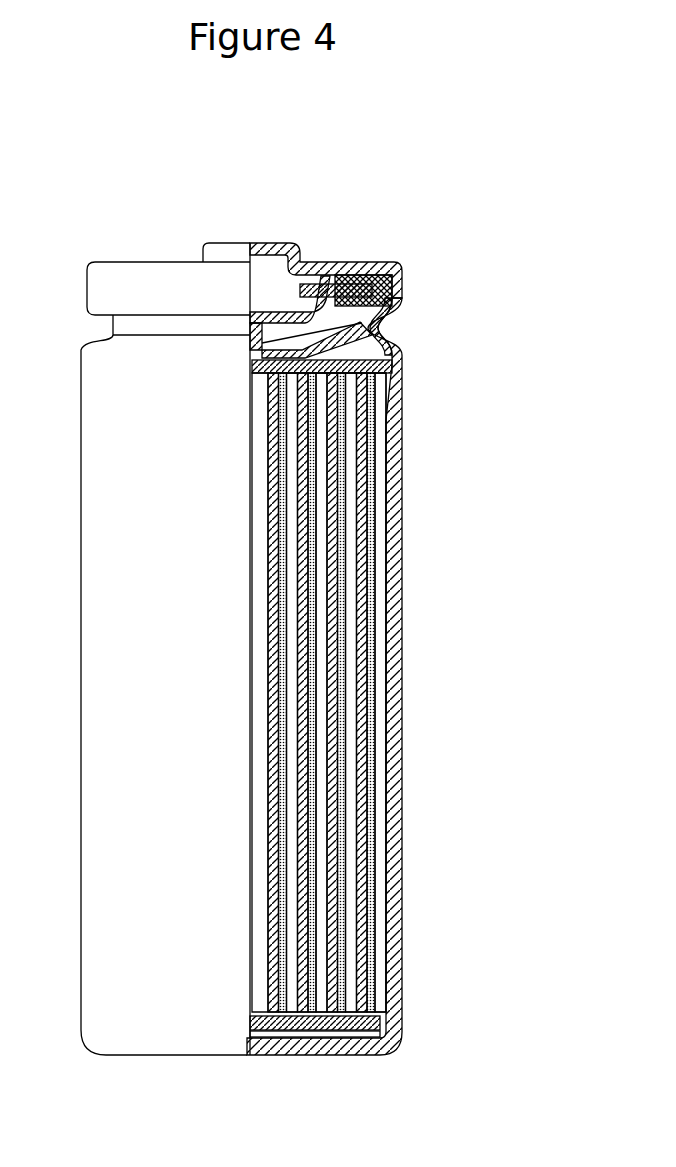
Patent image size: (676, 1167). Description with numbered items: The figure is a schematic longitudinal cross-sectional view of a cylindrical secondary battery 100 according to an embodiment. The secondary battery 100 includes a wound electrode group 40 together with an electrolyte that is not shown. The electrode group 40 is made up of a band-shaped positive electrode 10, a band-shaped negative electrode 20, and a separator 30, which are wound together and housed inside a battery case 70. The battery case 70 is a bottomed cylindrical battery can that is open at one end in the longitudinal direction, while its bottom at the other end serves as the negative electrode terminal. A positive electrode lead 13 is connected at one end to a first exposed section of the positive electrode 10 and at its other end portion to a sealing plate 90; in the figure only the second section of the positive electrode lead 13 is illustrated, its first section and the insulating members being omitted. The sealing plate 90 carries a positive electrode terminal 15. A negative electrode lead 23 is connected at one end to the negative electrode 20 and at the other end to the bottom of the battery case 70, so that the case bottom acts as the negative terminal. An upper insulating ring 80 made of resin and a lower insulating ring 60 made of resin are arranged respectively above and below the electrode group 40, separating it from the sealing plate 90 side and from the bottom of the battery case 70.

The secondary battery 100 is at (218, 157).
The positive electrode terminal 15 is at (284, 243).
The sealing plate 90 is at (377, 262).
The positive electrode lead 13 is at (377, 328).
The upper insulating ring 80 is at (400, 365).
The battery case 70 is at (387, 793).
The electrode group 40 is at (382, 692).
The negative electrode 20 is at (370, 515).
The separator 30 is at (368, 606).
The positive electrode 10 is at (464, 482).
The lower insulating ring 60 is at (297, 1055).
The negative electrode lead 23 is at (350, 1055).